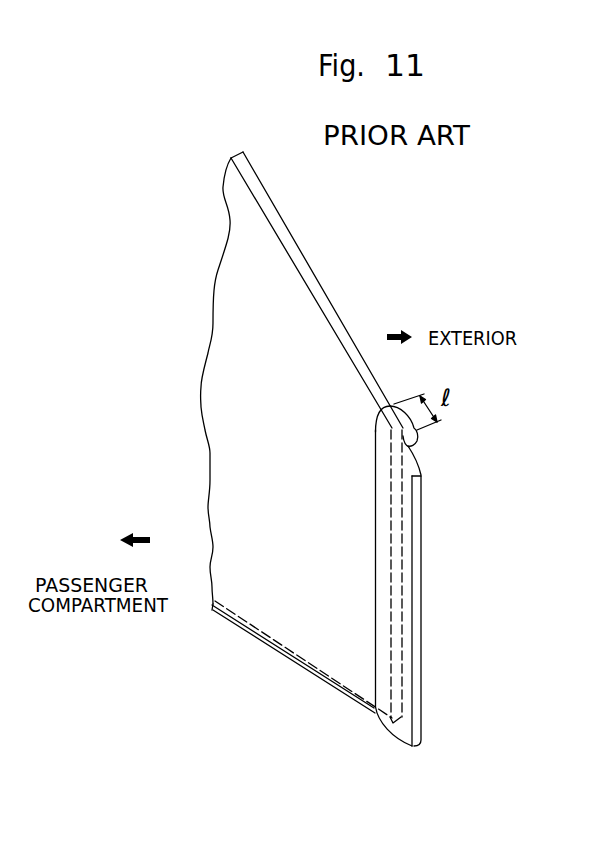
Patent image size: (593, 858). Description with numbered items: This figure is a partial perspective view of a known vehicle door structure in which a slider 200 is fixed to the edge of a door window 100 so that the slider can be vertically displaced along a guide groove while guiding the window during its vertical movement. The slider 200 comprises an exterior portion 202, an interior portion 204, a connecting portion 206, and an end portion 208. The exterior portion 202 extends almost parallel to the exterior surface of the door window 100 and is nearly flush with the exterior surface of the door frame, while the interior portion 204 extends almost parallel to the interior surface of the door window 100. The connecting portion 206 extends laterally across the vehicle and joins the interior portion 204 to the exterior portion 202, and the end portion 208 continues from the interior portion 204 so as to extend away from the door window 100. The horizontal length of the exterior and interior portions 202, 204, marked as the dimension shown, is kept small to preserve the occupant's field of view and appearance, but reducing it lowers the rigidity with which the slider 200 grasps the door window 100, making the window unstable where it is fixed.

The door window 100 is at (322, 331).
The slider 200 is at (415, 576).
The exterior portion 202 is at (417, 430).
The interior portion 204 is at (380, 421).
The connecting portion 206 is at (411, 445).
The end portion 208 is at (420, 474).